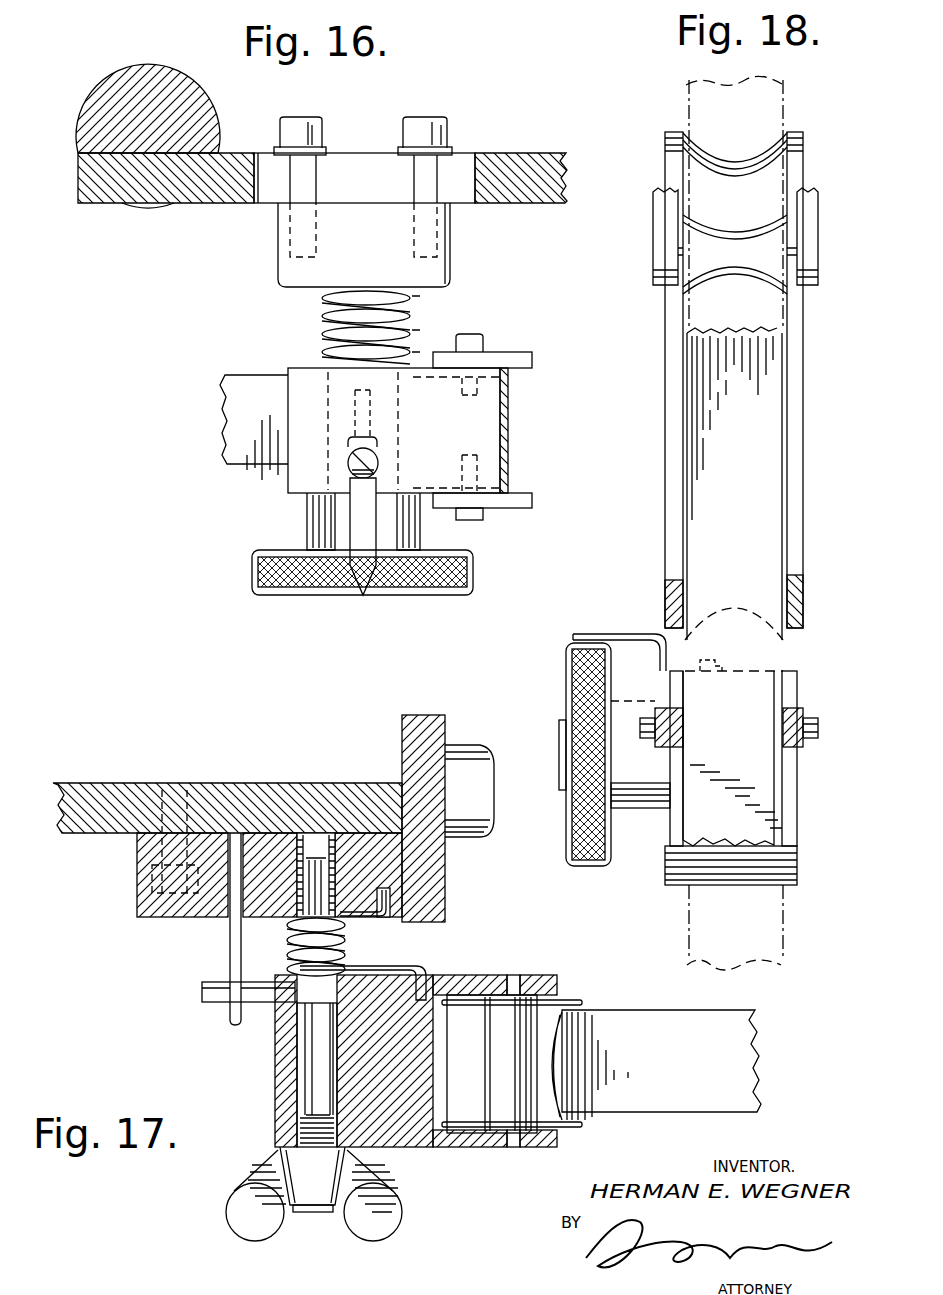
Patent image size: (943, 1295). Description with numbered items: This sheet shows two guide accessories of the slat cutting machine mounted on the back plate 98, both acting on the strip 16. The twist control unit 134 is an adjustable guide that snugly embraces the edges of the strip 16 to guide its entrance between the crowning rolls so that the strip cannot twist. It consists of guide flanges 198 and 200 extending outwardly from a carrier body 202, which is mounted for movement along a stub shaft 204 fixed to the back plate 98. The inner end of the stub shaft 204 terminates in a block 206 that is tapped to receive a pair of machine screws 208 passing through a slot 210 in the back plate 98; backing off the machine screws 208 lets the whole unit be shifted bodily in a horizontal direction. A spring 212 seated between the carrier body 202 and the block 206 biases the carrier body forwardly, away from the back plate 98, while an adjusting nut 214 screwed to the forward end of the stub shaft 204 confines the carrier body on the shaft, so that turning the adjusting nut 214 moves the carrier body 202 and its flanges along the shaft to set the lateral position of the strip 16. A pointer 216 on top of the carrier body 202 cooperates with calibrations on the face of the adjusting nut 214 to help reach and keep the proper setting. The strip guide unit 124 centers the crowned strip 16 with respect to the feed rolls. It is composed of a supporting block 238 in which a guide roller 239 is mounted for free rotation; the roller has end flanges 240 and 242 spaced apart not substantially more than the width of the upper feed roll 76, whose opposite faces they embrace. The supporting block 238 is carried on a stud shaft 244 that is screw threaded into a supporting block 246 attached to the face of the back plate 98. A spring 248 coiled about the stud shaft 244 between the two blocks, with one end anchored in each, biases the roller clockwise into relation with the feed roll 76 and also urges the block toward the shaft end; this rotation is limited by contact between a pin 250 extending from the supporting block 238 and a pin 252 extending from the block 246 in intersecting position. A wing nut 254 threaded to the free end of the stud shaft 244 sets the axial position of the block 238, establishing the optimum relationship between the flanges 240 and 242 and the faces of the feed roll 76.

In FIG. 16, the strip 16 is at (508, 421).
In FIG. 18, the strip 16 is at (752, 452).
In FIG. 17, the strip 16 is at (553, 1040).
In FIG. 17, the upper feed roll 76 is at (703, 1069).
In FIG. 16, the back plate 98 is at (524, 162).
In FIG. 17, the back plate 98 is at (118, 786).
In FIG. 17, the strip guide unit 124 is at (281, 735).
In FIG. 16, the twist control unit 134 is at (257, 360).
In FIG. 18, the twist control unit 134 is at (643, 600).
In FIG. 16, the guide flange 198 is at (510, 361).
In FIG. 18, the guide flange 198 is at (802, 712).
In FIG. 16, the guide flange 200 is at (497, 508).
In FIG. 18, the guide flange 200 is at (660, 709).
In FIG. 16, the carrier body 202 is at (300, 445).
In FIG. 18, the carrier body 202 is at (586, 701).
In FIG. 16, the stub shaft 204 is at (412, 330).
In FIG. 16, the block 206 is at (450, 239).
In FIG. 16, the machine screws 208 is at (415, 125).
In FIG. 16, the slot 210 is at (455, 162).
In FIG. 16, the spring 212 is at (326, 318).
In FIG. 16, the adjusting nut 214 is at (252, 578).
In FIG. 16, the pointer 216 is at (356, 583).
In FIG. 18, the pointer 216 is at (604, 634).
In FIG. 17, the supporting block 238 is at (395, 1100).
In FIG. 17, the guide roller 239 is at (500, 1018).
In FIG. 17, the end flange 240 is at (576, 1000).
In FIG. 17, the end flange 242 is at (578, 1127).
In FIG. 17, the stud shaft 244 is at (309, 1060).
In FIG. 17, the supporting block 246 is at (214, 906).
In FIG. 17, the spring 248 is at (346, 949).
In FIG. 17, the pin 250 is at (201, 990).
In FIG. 17, the pin 252 is at (231, 954).
In FIG. 17, the wing nut 254 is at (386, 1208).